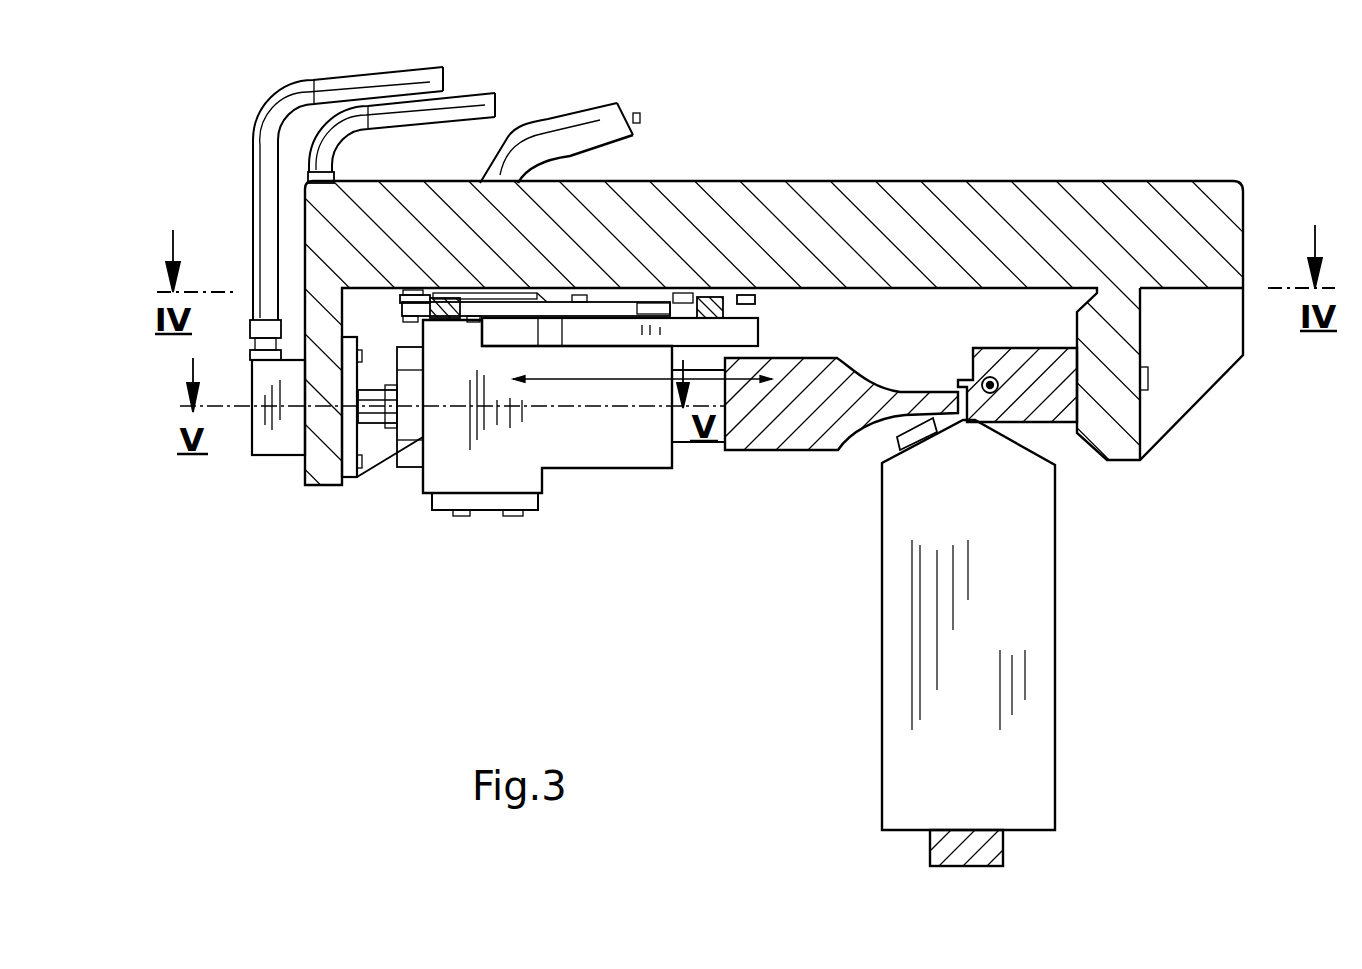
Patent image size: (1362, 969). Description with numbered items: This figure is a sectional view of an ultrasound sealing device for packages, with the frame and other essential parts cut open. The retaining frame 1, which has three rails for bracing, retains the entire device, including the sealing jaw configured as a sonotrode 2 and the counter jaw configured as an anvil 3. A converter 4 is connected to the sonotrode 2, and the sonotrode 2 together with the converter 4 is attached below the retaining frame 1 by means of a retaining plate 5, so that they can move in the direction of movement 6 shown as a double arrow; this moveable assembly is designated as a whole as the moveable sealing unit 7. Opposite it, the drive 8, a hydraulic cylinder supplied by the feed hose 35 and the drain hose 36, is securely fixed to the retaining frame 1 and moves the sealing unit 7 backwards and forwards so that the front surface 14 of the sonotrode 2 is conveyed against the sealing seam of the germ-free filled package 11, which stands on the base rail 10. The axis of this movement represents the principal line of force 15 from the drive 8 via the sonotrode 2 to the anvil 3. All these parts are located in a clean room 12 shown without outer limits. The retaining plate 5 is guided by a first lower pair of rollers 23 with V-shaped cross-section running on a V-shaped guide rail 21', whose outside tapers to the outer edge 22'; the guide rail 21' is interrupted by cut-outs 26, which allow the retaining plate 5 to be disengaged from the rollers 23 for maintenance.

The retaining frame 1 is at (893, 195).
The sonotrode 2 is at (792, 427).
The anvil 3 is at (1037, 400).
The converter 4 is at (560, 440).
The retaining plate 5 is at (735, 327).
The direction of movement 6 is at (585, 379).
The moveable sealing unit 7 is at (508, 532).
The drive 8 is at (279, 455).
The base rail 10 is at (982, 849).
The package 11 is at (1024, 612).
The clean room 12 is at (1233, 543).
The front surface 14 is at (957, 393).
The principal line of force 15 is at (443, 408).
The guide rail 21' is at (526, 227).
The outer edge 22' is at (808, 192).
The first lower pair of rollers 23 is at (724, 297).
The cut-outs 26 is at (660, 295).
The feed hose 35 is at (260, 193).
The drain hose 36 is at (487, 100).